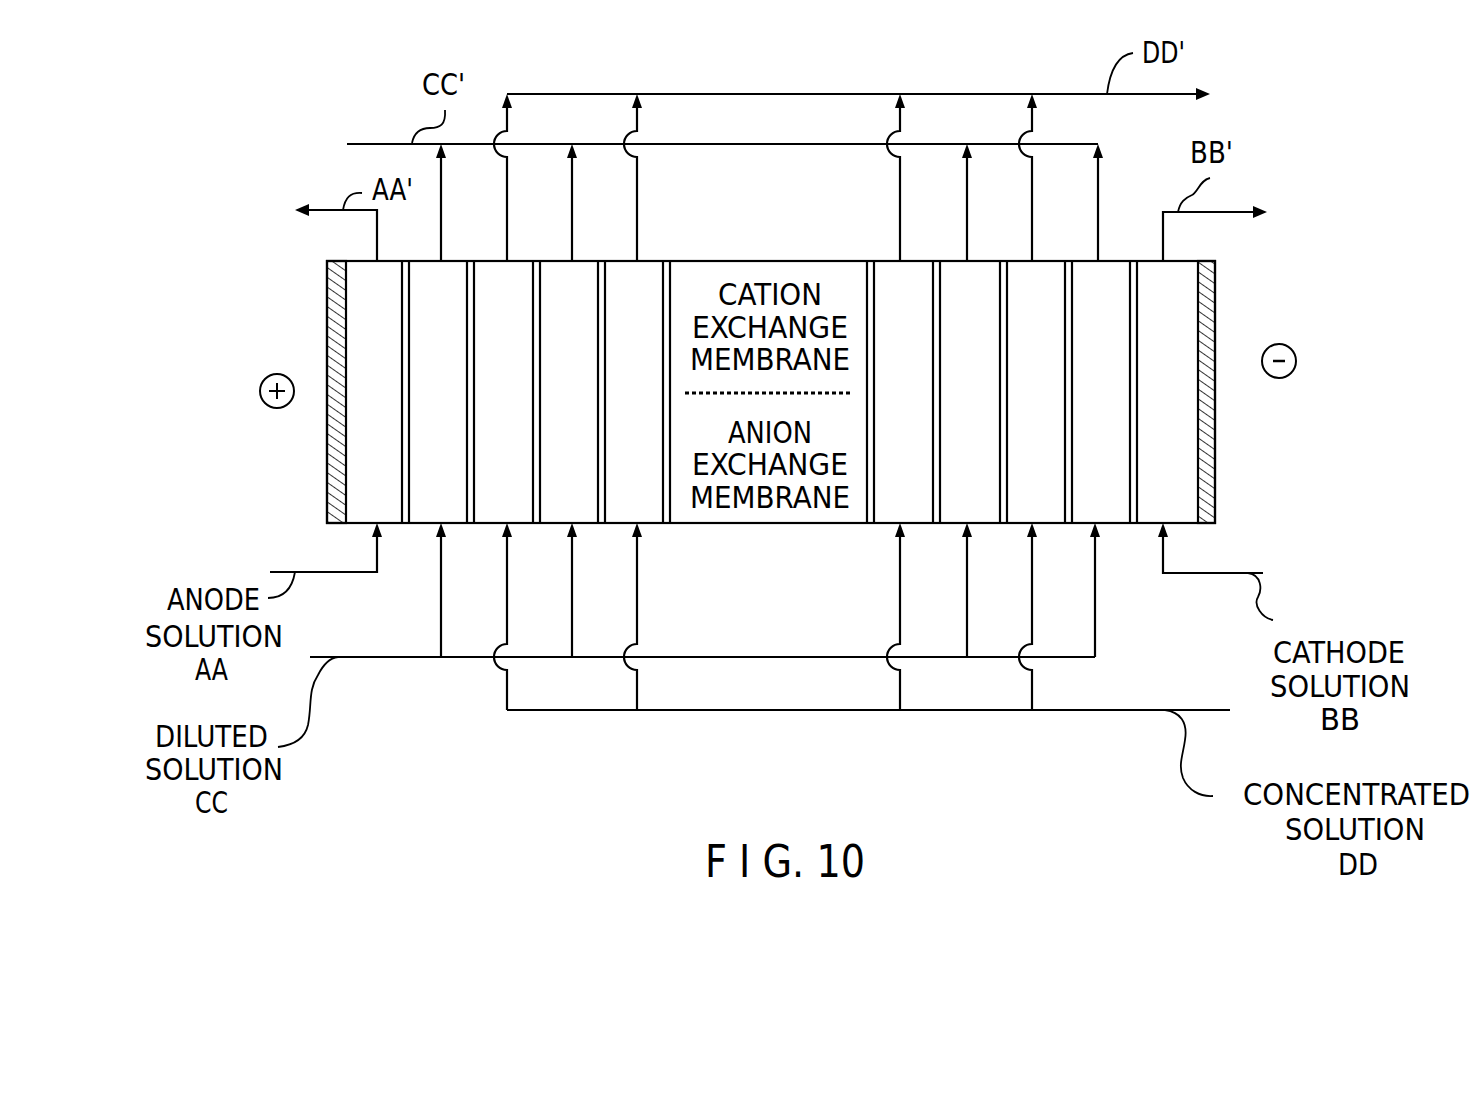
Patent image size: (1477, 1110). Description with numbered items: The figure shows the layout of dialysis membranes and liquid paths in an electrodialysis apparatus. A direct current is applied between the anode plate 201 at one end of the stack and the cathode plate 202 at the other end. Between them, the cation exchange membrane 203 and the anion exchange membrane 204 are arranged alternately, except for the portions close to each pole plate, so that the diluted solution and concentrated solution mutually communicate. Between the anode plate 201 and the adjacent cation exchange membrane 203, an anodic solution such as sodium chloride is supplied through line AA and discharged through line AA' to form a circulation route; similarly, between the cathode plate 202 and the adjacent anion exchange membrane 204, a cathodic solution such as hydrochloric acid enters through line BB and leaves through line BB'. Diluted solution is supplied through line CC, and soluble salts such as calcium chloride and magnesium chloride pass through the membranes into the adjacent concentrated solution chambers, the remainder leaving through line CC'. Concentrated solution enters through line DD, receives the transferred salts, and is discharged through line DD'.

The anode plate 201 is at (327, 512).
The cathode plate 202 is at (1215, 487).
The cation exchange membrane 203 is at (410, 442).
The anion exchange membrane 204 is at (542, 442).